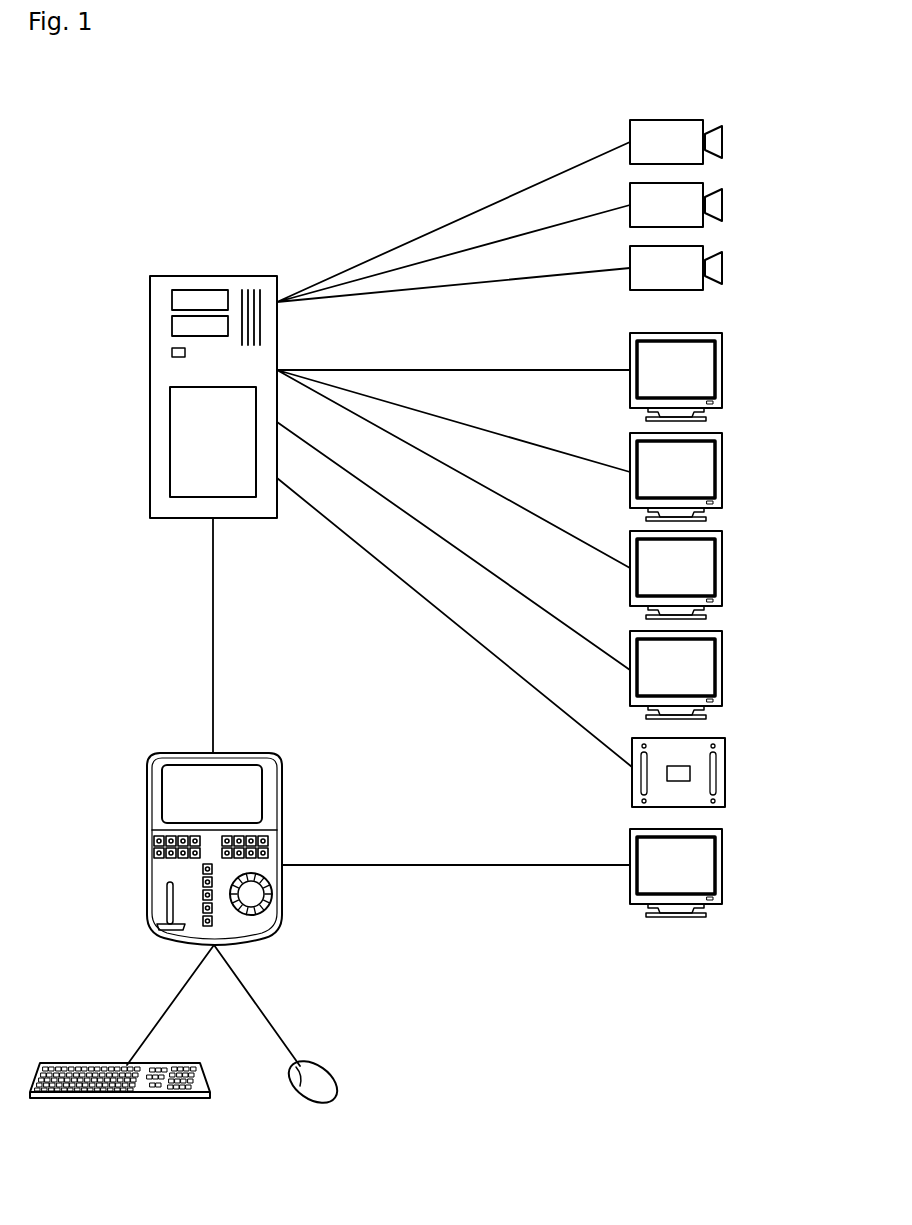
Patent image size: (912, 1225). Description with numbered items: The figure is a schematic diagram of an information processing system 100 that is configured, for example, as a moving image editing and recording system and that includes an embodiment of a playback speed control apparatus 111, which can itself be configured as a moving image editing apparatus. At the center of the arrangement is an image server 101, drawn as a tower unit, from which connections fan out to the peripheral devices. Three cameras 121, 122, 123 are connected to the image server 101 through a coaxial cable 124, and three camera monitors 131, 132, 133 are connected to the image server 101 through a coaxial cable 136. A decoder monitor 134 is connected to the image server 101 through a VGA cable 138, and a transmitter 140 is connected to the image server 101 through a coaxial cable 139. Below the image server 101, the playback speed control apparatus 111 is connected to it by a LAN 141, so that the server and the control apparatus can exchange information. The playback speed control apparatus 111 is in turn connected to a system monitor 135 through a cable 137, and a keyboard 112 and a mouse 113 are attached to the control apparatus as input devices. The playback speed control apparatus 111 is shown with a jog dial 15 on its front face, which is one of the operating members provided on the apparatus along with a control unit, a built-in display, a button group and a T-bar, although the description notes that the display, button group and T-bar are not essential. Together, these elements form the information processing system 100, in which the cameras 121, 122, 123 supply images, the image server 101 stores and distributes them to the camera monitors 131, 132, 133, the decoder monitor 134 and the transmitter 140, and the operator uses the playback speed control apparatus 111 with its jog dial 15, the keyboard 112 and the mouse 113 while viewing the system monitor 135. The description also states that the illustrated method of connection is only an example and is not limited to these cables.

The information processing system 100 is at (168, 121).
The image server 101 is at (213, 276).
The playback speed control apparatus 111 is at (230, 820).
The keyboard 112 is at (56, 1063).
The mouse 113 is at (327, 1068).
The jog dial 15 is at (274, 888).
The camera 121 is at (724, 134).
The camera 122 is at (724, 197).
The camera 123 is at (724, 260).
The coaxial cable 124 is at (425, 230).
The camera monitor 131 is at (723, 357).
The camera monitor 132 is at (723, 457).
The camera monitor 133 is at (723, 555).
The decoder monitor 134 is at (723, 655).
The system monitor 135 is at (723, 853).
The coaxial cable 136 is at (493, 370).
The cable 137 is at (432, 865).
The VGA cable 138 is at (491, 570).
The coaxial cable 139 is at (530, 682).
The transmitter 140 is at (726, 765).
The LAN 141 is at (214, 622).